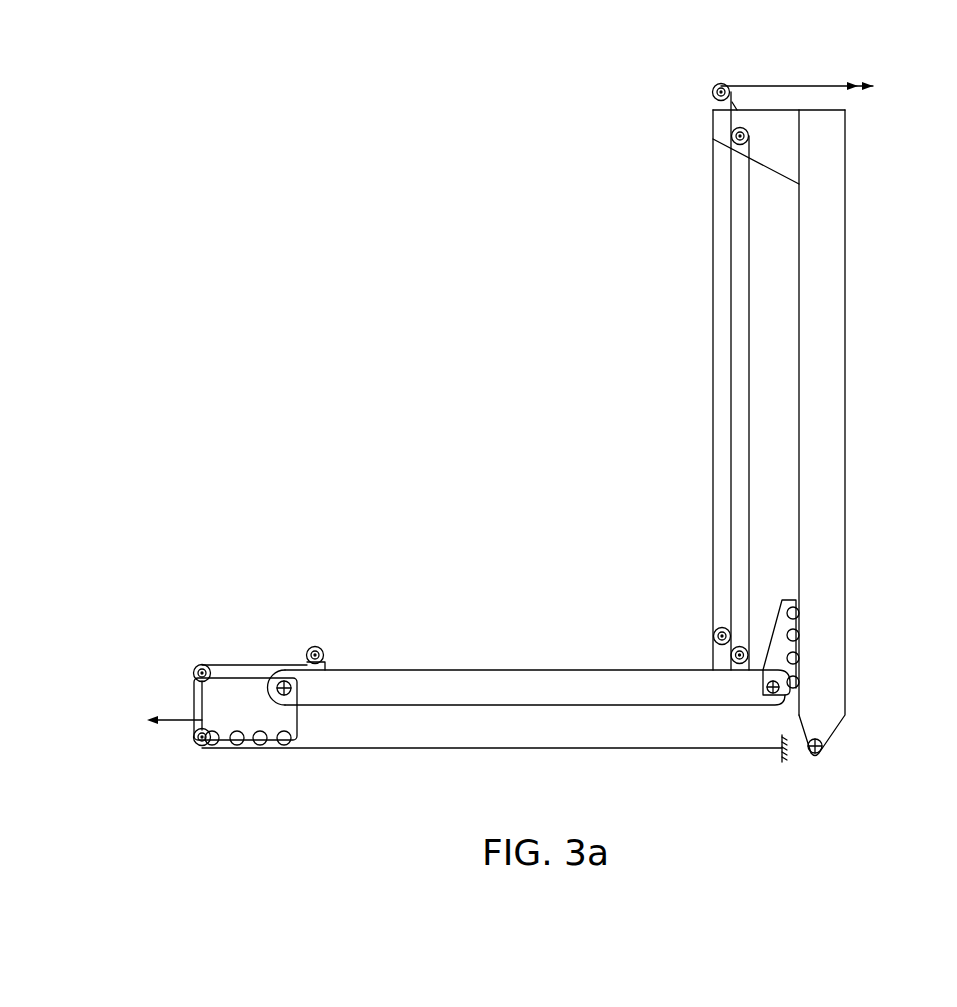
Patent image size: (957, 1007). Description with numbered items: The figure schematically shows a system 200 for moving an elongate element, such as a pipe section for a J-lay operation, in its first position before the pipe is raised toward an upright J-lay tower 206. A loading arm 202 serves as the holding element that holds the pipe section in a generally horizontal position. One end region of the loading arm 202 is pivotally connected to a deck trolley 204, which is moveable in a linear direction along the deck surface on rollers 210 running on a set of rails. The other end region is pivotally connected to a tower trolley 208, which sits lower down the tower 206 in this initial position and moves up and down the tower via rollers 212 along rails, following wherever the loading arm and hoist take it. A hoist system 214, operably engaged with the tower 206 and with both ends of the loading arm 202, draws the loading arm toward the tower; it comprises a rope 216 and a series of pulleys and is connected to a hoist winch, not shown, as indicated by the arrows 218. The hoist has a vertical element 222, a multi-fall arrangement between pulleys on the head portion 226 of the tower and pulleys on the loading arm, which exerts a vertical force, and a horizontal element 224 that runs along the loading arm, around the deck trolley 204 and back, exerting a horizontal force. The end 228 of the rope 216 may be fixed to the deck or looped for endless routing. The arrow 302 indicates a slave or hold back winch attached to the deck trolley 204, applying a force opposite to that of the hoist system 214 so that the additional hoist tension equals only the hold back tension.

The system for moving an elongate element 200 is at (257, 176).
The loading arm 202 is at (490, 668).
The deck trolley 204 is at (252, 661).
The J-lay tower 206 is at (847, 330).
The tower trolley 208 is at (788, 598).
The rollers 210 is at (250, 745).
The rollers 212 is at (800, 627).
The hoist system 214 is at (692, 175).
The rope 216 is at (713, 214).
The arrows 218 is at (820, 84).
The vertical element 222 is at (712, 325).
The horizontal element 224 is at (515, 756).
The head portion 226 is at (790, 146).
The end of the rope 228 is at (780, 757).
The arrow 302 is at (173, 720).